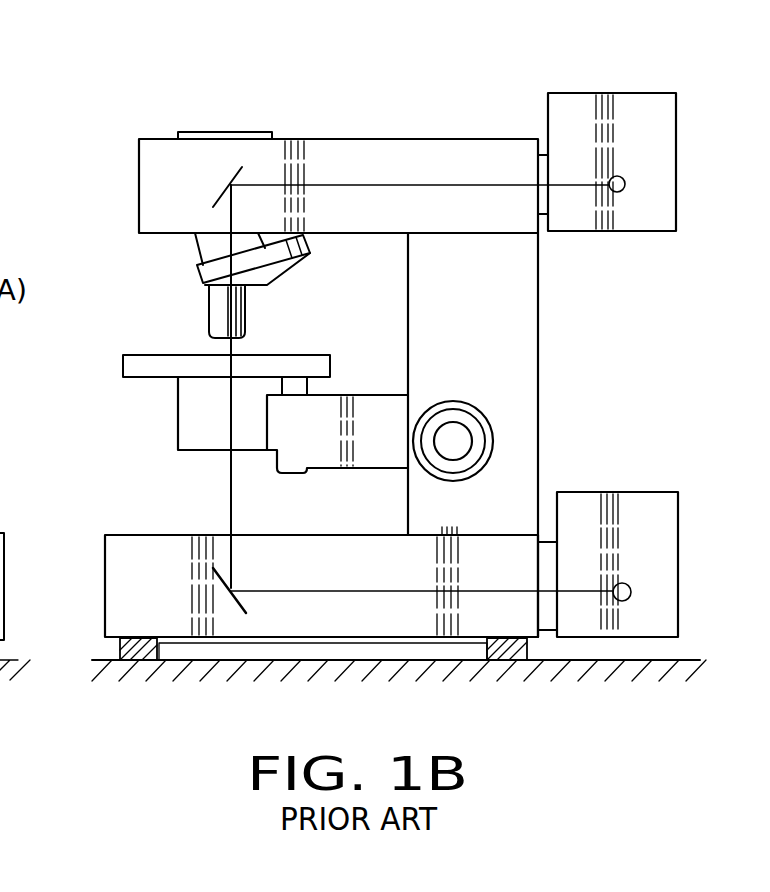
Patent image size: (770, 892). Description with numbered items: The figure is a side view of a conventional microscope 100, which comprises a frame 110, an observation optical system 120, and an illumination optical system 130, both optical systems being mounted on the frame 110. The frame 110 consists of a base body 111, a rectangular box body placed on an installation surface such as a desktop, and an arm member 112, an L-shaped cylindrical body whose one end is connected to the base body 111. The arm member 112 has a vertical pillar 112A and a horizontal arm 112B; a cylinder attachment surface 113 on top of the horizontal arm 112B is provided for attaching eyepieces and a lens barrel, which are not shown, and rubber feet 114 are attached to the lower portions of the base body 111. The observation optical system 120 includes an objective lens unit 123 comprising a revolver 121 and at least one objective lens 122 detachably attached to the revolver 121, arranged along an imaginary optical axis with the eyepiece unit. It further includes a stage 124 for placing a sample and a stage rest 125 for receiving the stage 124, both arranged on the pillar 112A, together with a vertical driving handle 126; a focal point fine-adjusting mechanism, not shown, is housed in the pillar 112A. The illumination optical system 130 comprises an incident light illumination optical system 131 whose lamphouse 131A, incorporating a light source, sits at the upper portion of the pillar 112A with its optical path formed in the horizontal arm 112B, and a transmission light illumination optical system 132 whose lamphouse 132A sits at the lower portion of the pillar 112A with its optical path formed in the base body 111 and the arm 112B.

The microscope 100 is at (541, 275).
The frame 110 is at (541, 452).
The base body 111 is at (115, 548).
The arm member 112 is at (541, 360).
The pillar 112A is at (540, 320).
The horizontal arm 112B is at (396, 139).
The cylinder attachment surface 113 is at (219, 131).
The rubber feet 114 is at (125, 652).
The observation optical system 120 is at (195, 245).
The revolver 121 is at (197, 278).
The objective lens 122 is at (213, 320).
The objective lens unit 123 is at (300, 260).
The stage 124 is at (126, 368).
The stage rest 125 is at (277, 411).
The vertical driving handle 126 is at (473, 440).
The illumination optical system 130 is at (678, 195).
The incident light illumination optical system 131 is at (345, 184).
The lamphouse 131A is at (598, 93).
The transmission light illumination optical system 132 is at (355, 600).
The lamphouse 132A is at (676, 497).